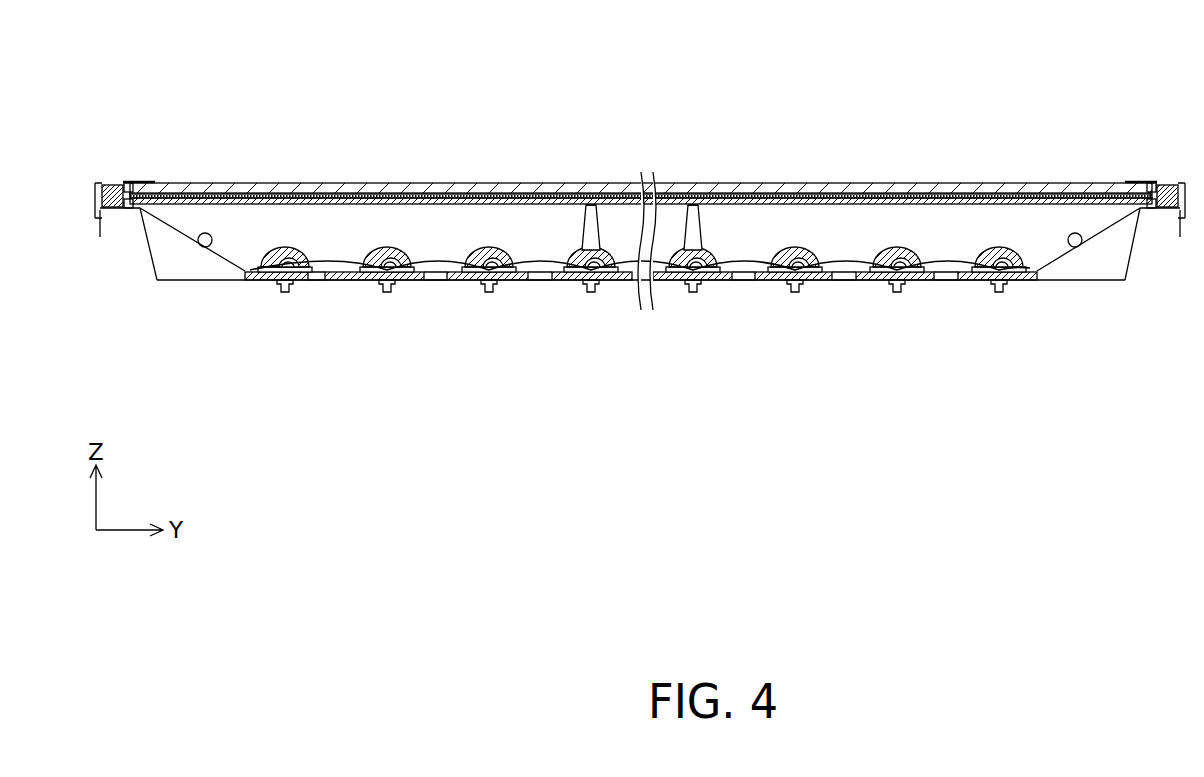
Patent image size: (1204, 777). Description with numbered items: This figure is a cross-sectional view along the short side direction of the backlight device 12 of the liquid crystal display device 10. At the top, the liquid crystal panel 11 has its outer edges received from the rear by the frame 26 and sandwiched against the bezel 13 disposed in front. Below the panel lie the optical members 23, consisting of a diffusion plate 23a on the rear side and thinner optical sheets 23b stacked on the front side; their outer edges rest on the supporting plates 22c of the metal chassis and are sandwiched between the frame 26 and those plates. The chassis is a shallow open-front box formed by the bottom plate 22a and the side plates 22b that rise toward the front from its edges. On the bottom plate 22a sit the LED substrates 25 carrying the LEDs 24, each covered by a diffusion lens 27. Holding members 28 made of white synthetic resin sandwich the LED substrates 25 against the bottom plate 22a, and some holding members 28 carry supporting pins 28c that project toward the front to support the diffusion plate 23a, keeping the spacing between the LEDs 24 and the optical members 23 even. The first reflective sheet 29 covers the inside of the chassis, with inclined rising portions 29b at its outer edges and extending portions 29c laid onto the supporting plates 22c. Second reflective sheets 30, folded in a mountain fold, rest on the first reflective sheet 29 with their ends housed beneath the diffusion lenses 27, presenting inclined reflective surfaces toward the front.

The liquid crystal display device 10 is at (651, 83).
The liquid crystal panel 11 is at (250, 183).
The backlight device 12 is at (593, 364).
The bezel 13 is at (144, 183).
The bottom plate 22a is at (219, 282).
The side plate 22b is at (150, 252).
The supporting plate 22c is at (118, 212).
The optical member 23 is at (641, 140).
The diffusion plate 23a is at (385, 123).
The optical sheet 23b is at (395, 197).
The LED 24 is at (302, 281).
The LED substrate 25 is at (320, 282).
The frame 26 is at (106, 190).
The diffusion lens 27 is at (642, 262).
The holding member 28 is at (497, 284).
The supporting pin 28c is at (598, 206).
The first reflective sheet 29 is at (178, 214).
The rising portion 29b is at (212, 248).
The extending portion 29c is at (138, 184).
The second reflective sheet 30 is at (320, 266).